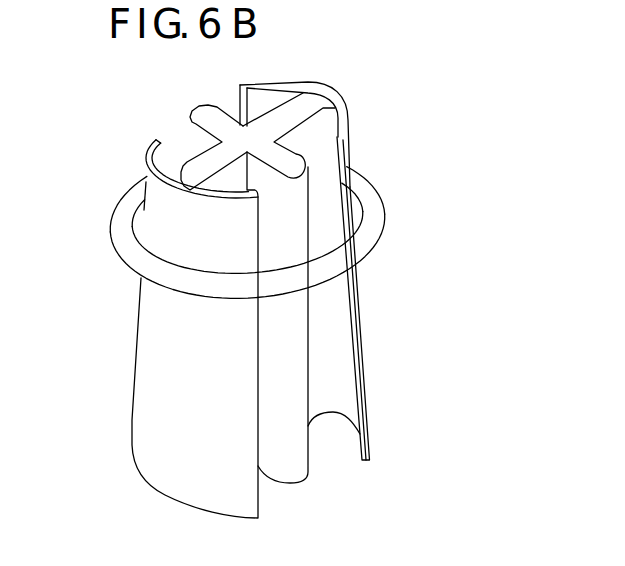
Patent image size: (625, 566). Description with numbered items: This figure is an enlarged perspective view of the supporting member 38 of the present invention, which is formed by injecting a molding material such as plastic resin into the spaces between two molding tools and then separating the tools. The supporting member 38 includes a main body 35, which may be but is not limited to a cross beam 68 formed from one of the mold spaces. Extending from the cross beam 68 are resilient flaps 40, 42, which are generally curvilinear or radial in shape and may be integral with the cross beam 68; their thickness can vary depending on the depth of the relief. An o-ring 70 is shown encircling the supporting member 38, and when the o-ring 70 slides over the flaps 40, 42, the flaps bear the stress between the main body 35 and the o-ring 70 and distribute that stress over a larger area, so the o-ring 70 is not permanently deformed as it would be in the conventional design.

The main body 35 is at (190, 146).
The supporting member 38 is at (333, 80).
The flap 40 is at (150, 433).
The flap 42 is at (366, 399).
The cross beam 68 is at (209, 113).
The o-ring 70 is at (367, 218).